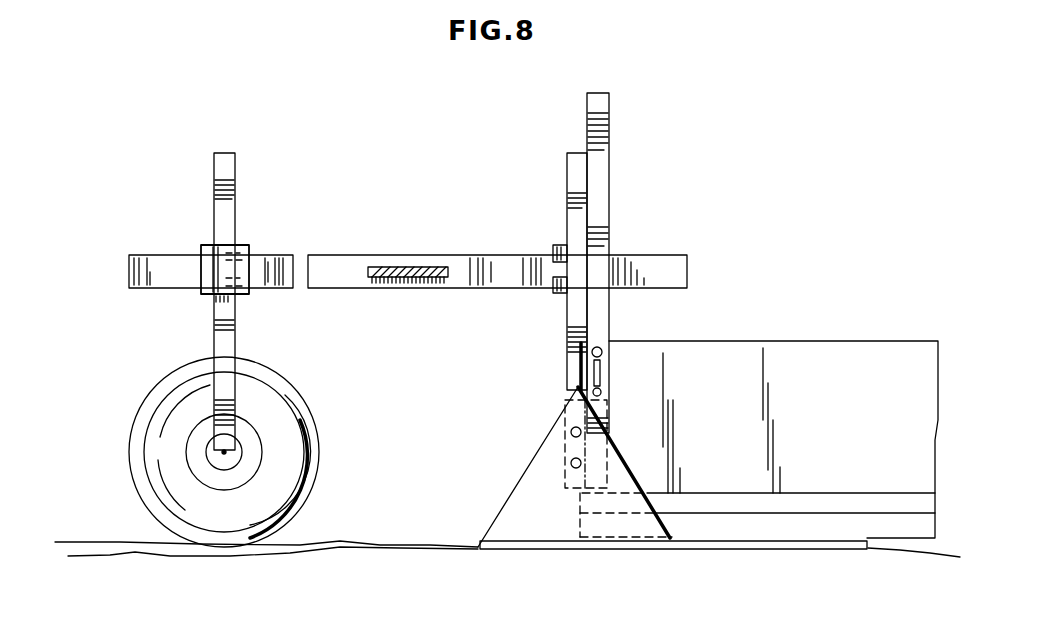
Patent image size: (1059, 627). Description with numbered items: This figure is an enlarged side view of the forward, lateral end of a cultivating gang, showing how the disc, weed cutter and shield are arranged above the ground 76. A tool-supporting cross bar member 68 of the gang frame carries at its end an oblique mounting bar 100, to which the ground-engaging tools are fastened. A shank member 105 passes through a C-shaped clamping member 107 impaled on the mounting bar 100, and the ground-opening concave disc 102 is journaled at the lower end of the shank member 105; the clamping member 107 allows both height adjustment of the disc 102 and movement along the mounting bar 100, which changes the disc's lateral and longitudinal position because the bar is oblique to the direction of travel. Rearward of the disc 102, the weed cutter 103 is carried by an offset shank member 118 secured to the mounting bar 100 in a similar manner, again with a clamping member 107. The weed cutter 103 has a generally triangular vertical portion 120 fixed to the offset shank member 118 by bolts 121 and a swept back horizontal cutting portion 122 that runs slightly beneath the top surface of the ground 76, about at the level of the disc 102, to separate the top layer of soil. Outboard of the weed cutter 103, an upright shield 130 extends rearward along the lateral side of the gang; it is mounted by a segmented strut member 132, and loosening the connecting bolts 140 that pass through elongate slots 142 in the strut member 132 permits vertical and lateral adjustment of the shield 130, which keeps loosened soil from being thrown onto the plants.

The tool-supporting cross bar member 68 is at (413, 270).
The ground 76 is at (352, 575).
The mounting bar 100 is at (343, 262).
The ground-opening concave disc 102 is at (295, 422).
The weed cutter 103 is at (500, 517).
The shank member 105 is at (228, 220).
The C-shaped clamping member 107 is at (208, 247).
The offset shank member 118 is at (577, 173).
The generally triangular vertical portion 120 is at (571, 462).
The bolts 121 is at (571, 433).
The swept back horizontal cutting portion 122 is at (760, 545).
The upright shield 130 is at (790, 355).
The segmented strut member 132 is at (602, 178).
The connecting bolts 140 is at (603, 362).
The elongate slots 142 is at (607, 391).